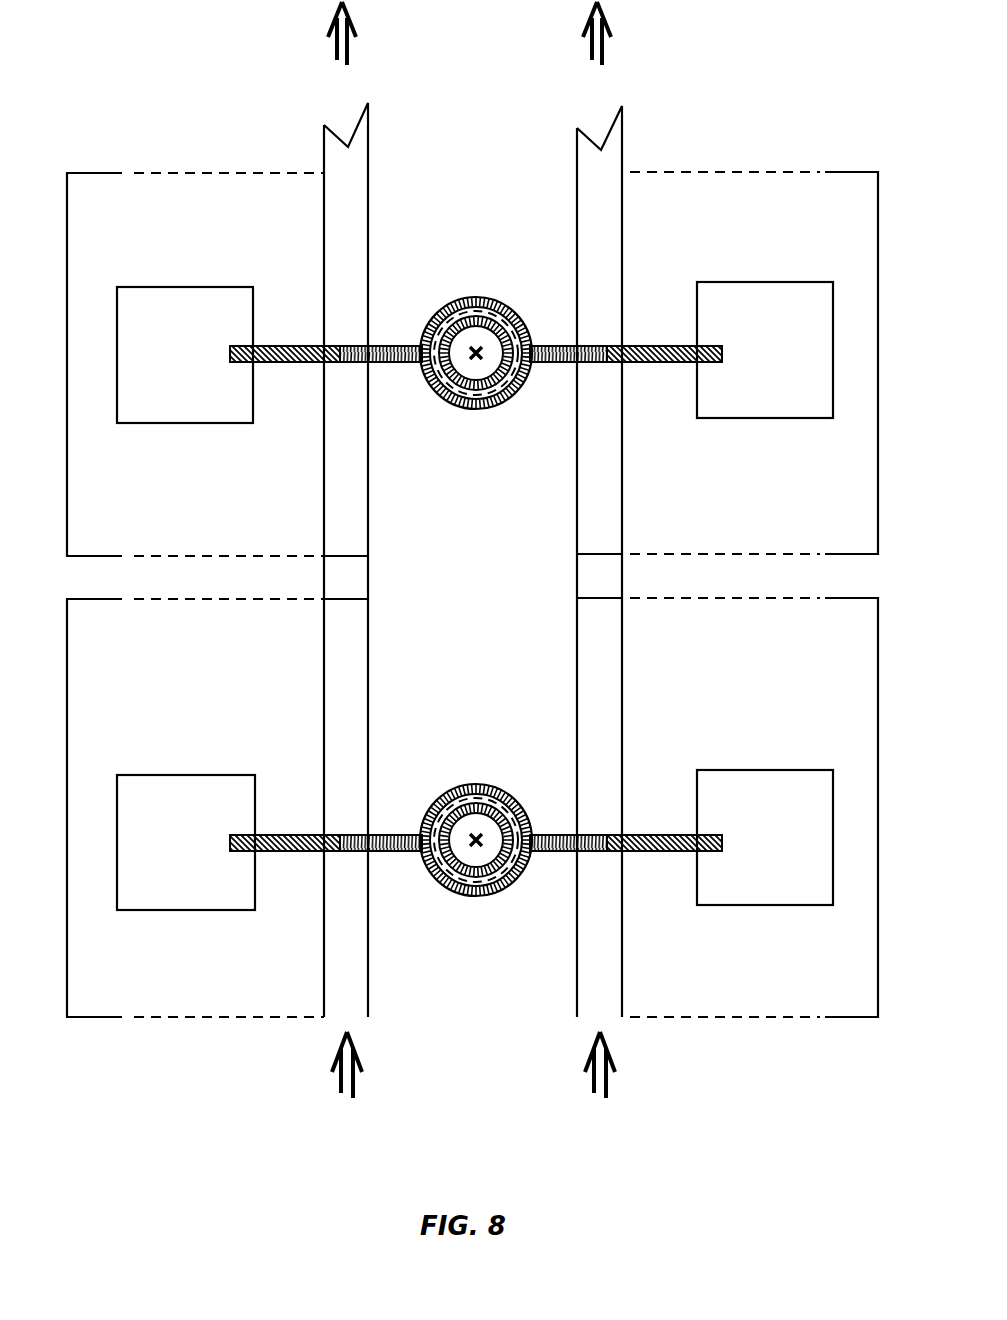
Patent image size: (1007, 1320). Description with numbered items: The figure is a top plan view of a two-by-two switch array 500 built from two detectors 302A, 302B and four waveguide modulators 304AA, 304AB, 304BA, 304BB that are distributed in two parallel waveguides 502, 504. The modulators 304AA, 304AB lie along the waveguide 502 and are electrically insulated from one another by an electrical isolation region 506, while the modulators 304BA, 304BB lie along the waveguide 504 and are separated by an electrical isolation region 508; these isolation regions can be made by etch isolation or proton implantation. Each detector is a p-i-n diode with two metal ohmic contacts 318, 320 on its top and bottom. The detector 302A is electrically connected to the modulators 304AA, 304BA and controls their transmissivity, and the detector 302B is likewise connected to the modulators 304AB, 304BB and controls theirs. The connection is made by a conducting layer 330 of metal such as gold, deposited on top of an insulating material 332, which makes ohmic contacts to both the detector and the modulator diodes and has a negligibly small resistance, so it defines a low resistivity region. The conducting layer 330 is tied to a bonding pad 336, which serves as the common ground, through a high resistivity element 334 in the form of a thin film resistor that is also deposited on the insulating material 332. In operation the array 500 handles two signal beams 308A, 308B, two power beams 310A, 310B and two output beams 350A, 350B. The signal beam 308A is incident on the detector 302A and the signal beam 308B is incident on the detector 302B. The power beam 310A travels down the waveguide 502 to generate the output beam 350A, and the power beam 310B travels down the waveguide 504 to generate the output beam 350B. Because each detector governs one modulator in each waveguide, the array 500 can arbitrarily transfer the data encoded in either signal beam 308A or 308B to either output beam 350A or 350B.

The switch array 500 is at (776, 138).
The waveguide 502 is at (368, 150).
The waveguide 504 is at (577, 148).
The electrical isolation region 506 is at (368, 580).
The electrical isolation region 508 is at (577, 570).
The detector 302A is at (456, 793).
The detector 302B is at (456, 306).
The waveguide modulator 304AA is at (67, 656).
The waveguide modulator 304AB is at (67, 470).
The waveguide modulator 304BA is at (878, 716).
The waveguide modulator 304BB is at (878, 486).
The signal beam 308A is at (477, 845).
The signal beam 308B is at (477, 358).
The power beam 310A is at (355, 1085).
The power beam 310B is at (608, 1085).
The metal ohmic contact 318 is at (492, 312).
The metal ohmic contact 320 is at (446, 401).
The conducting layer 330 is at (404, 346).
The insulating material 332 is at (267, 660).
The high resistivity element 334 is at (286, 346).
The bonding pad 336 is at (205, 338).
The output beam 350A is at (349, 45).
The output beam 350B is at (604, 45).